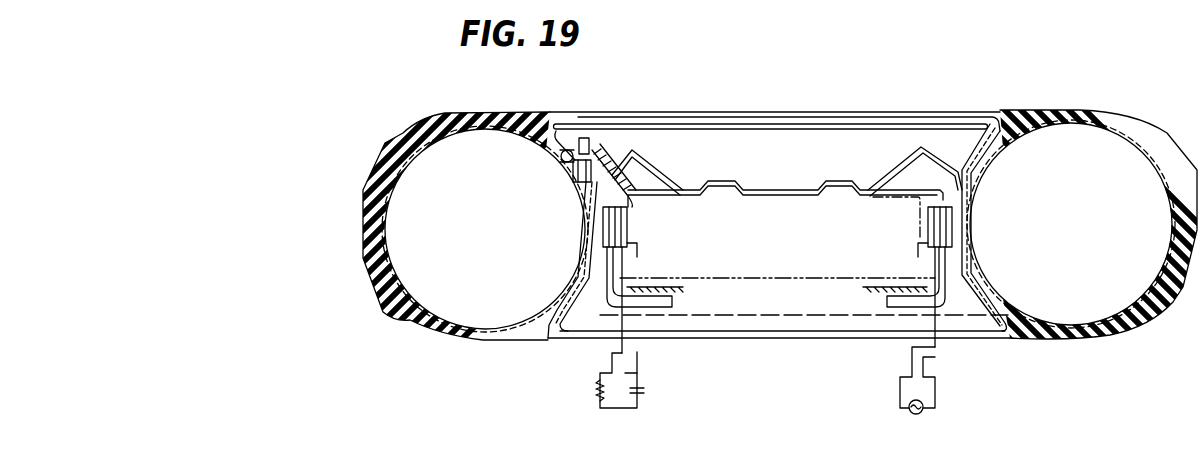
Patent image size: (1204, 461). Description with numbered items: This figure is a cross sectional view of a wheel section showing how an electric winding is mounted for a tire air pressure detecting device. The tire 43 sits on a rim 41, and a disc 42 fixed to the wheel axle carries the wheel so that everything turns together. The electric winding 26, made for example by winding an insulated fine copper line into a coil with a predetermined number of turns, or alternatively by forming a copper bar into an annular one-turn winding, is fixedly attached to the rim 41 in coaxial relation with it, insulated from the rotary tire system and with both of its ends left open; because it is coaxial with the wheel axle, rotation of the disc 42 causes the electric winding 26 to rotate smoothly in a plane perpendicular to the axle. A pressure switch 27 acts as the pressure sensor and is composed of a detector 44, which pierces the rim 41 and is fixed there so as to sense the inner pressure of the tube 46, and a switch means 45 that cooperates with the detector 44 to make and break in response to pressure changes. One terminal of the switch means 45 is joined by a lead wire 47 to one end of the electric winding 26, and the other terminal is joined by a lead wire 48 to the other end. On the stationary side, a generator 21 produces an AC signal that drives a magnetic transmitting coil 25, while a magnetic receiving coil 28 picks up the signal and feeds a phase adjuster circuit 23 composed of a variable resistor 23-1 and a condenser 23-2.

The generator 21 is at (915, 414).
The phase adjuster circuit 23 is at (640, 377).
The variable resistor 23-1 is at (598, 395).
The condenser 23-2 is at (645, 392).
The magnetic transmitting coil 25 is at (928, 219).
The electric winding 26 is at (592, 217).
The pressure switch 27 is at (584, 138).
The magnetic receiving coil 28 is at (628, 219).
The rim 41 is at (762, 124).
The disc 42 is at (884, 170).
The tire 43 is at (370, 184).
The detector 44 is at (573, 181).
The switch means 45 is at (561, 165).
The tube 46 is at (404, 172).
The lead wire 47 is at (639, 150).
The lead wire 48 is at (604, 185).